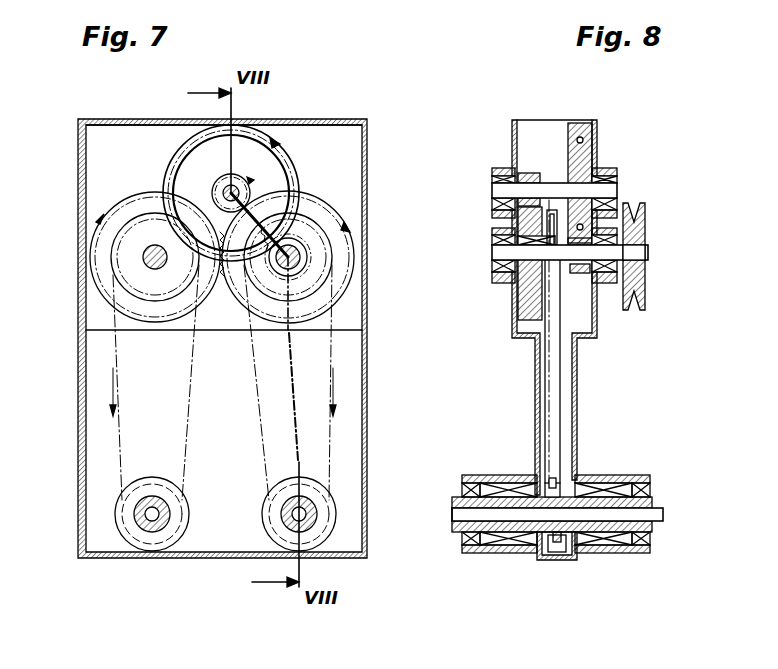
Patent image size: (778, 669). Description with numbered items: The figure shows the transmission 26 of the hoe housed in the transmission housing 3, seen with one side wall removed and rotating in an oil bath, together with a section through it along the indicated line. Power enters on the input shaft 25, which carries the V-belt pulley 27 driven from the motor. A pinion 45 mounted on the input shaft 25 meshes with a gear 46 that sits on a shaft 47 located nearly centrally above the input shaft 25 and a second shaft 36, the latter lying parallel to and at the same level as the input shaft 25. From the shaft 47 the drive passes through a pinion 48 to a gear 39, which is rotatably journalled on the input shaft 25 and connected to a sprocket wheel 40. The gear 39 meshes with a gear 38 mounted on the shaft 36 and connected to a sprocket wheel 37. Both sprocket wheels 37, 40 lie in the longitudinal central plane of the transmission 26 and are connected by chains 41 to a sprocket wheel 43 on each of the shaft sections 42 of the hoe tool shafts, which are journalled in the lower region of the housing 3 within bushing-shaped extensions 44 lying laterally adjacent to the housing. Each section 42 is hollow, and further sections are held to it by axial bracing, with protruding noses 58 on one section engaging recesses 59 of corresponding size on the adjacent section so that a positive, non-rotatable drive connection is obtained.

In FIG. 7, the transmission housing 3 is at (366, 162).
In FIG. 8, the transmission housing 3 is at (540, 119).
In FIG. 7, the input shaft 25 is at (306, 258).
In FIG. 8, the input shaft 25 is at (638, 259).
In FIG. 7, the transmission 26 is at (342, 134).
In FIG. 8, the pulley 27 is at (641, 229).
In FIG. 7, the shaft 36 is at (146, 260).
In FIG. 7, the sprocket wheel 37 is at (125, 252).
In FIG. 7, the gear 38 is at (105, 285).
In FIG. 7, the gear 39 is at (342, 278).
In FIG. 8, the gear 39 is at (522, 297).
In FIG. 7, the sprocket wheel 40 is at (318, 243).
In FIG. 8, the sprocket wheel 40 is at (557, 302).
In FIG. 7, the chains 41 is at (255, 359).
In FIG. 7, the shaft sections 42 is at (140, 527).
In FIG. 8, the shaft sections 42 is at (653, 498).
In FIG. 7, the sprocket wheel 43 is at (170, 532).
In FIG. 8, the sprocket wheel 43 is at (558, 556).
In FIG. 8, the bushing-shaped extensions 44 is at (480, 476).
In FIG. 8, the pinion 45 is at (578, 274).
In FIG. 7, the gear 46 is at (196, 139).
In FIG. 8, the gear 46 is at (586, 156).
In FIG. 7, the shaft 47 is at (228, 186).
In FIG. 8, the shaft 47 is at (606, 191).
In FIG. 8, the pinion 48 is at (522, 173).
In FIG. 8, the noses 58 is at (653, 522).
In FIG. 8, the recesses 59 is at (457, 512).